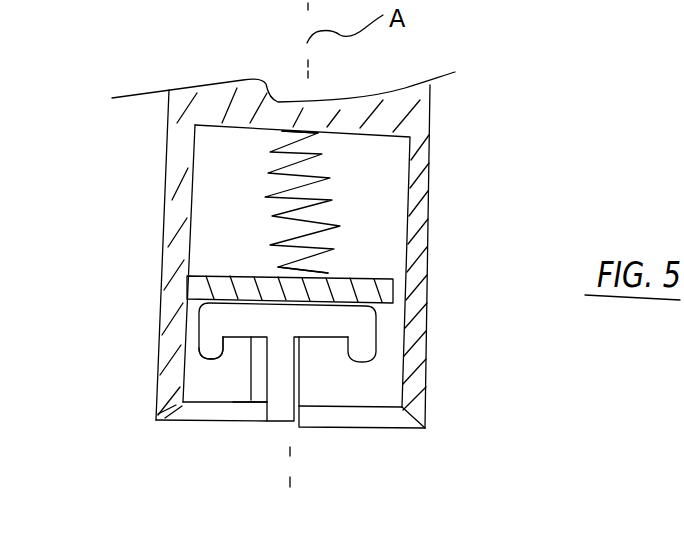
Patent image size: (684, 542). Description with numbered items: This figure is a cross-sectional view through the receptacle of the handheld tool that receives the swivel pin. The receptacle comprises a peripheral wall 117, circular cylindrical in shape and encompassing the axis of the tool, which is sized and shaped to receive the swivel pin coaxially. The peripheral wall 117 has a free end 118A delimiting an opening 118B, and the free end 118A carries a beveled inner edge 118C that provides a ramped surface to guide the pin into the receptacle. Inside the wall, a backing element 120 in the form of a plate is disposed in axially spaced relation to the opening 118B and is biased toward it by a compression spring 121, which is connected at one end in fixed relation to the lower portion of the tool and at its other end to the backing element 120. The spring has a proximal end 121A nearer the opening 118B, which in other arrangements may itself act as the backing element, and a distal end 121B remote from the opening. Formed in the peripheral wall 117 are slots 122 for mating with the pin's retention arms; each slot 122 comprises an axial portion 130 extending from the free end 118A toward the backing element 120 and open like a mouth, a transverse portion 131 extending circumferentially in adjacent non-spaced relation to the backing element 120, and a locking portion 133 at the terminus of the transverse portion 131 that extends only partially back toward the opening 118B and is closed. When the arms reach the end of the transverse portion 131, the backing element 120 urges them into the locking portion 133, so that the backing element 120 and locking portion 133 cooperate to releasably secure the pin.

The peripheral wall 117 is at (412, 372).
The free end 118A is at (405, 430).
The opening 118B is at (347, 433).
The beveled inner edge 118C is at (188, 422).
The backing element 120 is at (373, 278).
The compression spring 121 is at (331, 180).
The proximal end 121A is at (318, 271).
The distal end 121B is at (282, 133).
The slot 122 is at (247, 381).
The axial portion 130 is at (267, 421).
The transverse portion 131 is at (240, 370).
The locking portion 133 is at (200, 338).